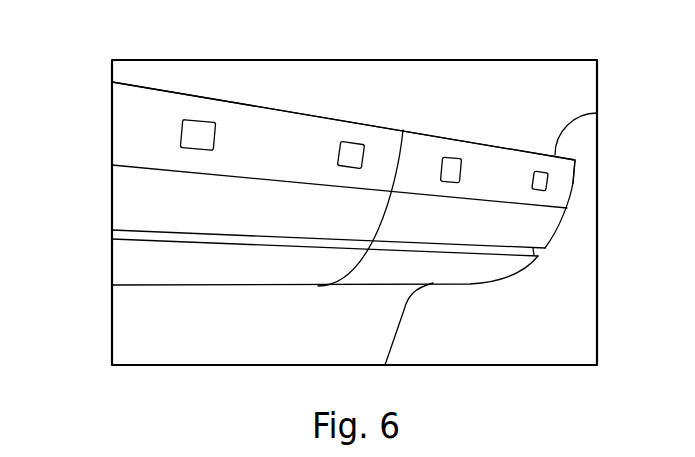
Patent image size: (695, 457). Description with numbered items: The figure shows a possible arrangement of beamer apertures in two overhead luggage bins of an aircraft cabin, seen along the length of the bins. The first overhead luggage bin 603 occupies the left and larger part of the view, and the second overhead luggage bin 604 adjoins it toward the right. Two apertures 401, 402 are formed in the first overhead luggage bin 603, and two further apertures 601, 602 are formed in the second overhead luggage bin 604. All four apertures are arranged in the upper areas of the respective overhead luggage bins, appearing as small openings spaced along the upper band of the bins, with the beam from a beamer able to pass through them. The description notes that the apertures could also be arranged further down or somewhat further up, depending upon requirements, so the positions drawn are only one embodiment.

The aperture 401 is at (202, 124).
The aperture 402 is at (356, 146).
The aperture 601 is at (456, 160).
The aperture 602 is at (544, 173).
The first overhead luggage bin 603 is at (125, 133).
The second overhead luggage bin 604 is at (558, 183).